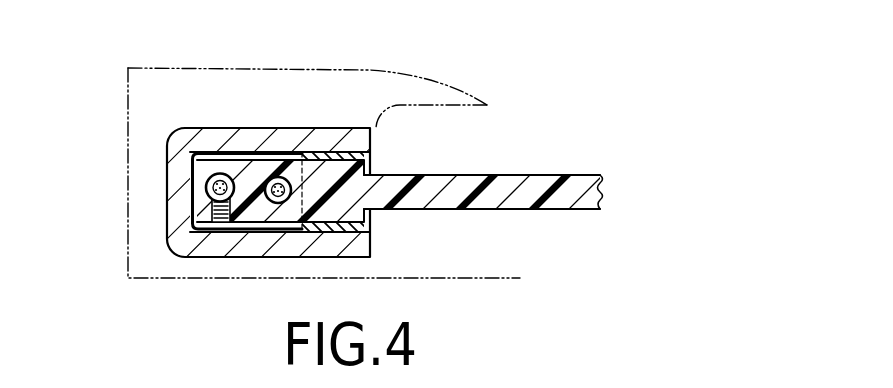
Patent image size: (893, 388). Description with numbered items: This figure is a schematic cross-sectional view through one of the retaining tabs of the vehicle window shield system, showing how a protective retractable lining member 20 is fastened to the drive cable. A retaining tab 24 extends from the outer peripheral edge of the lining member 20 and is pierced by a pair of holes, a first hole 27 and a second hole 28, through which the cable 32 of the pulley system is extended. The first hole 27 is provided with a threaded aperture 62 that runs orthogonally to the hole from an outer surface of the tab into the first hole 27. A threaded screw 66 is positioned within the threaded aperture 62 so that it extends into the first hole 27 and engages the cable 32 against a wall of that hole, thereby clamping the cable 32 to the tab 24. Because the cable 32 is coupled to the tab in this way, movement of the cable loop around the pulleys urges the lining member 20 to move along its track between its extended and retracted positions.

The protective retractable lining member 20 is at (502, 188).
The retaining tab 24 is at (272, 208).
The first hole 27 is at (207, 190).
The second hole 28 is at (300, 153).
The cable 32 is at (173, 106).
The threaded aperture 62 is at (207, 212).
The threaded screw 66 is at (216, 222).